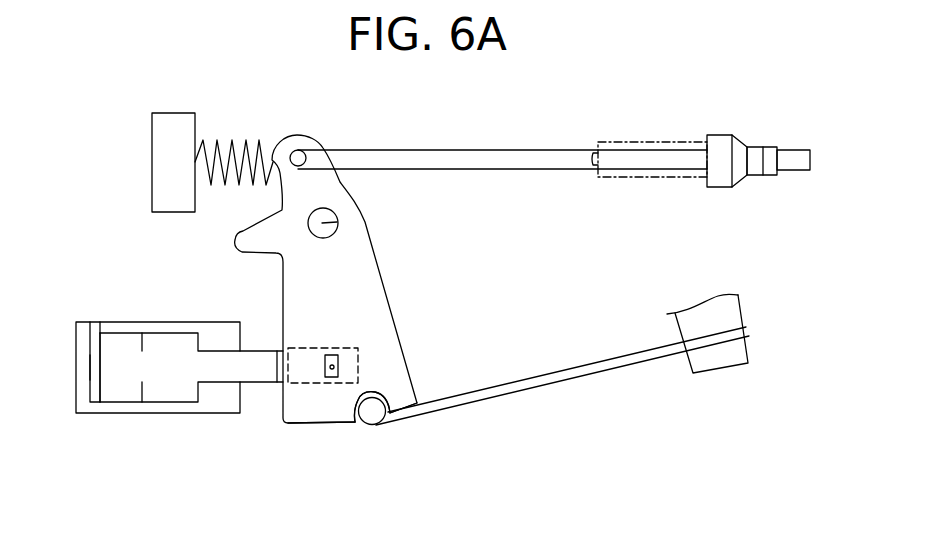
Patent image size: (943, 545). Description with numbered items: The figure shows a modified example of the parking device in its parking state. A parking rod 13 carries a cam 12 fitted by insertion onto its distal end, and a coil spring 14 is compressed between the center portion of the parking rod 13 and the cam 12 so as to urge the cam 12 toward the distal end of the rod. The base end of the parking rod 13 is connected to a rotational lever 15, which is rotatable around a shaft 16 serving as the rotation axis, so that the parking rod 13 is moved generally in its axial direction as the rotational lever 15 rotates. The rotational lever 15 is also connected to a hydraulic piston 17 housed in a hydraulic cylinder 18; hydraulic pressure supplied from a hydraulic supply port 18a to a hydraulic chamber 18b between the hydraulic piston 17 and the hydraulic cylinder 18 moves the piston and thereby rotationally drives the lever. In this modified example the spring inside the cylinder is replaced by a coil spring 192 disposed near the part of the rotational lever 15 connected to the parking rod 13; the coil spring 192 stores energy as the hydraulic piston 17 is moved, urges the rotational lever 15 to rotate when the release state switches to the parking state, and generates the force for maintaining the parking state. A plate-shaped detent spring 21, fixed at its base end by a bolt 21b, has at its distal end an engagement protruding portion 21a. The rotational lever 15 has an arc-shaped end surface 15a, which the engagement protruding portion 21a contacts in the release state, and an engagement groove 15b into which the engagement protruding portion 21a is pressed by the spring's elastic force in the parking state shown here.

The cam 12 is at (733, 147).
The parking rod 13 is at (528, 150).
The coil spring 14 is at (663, 143).
The rotational lever 15 is at (366, 224).
The end surface 15a is at (318, 425).
The engagement groove 15b is at (384, 392).
The shaft 16 is at (340, 220).
The hydraulic piston 17 is at (260, 384).
The hydraulic cylinder 18 is at (125, 327).
The hydraulic supply port 18a is at (97, 327).
The hydraulic chamber 18b is at (97, 366).
The coil spring 192 is at (260, 141).
The detent spring 21 is at (545, 380).
The engagement protruding portion 21a is at (372, 418).
The bolt 21b is at (748, 363).